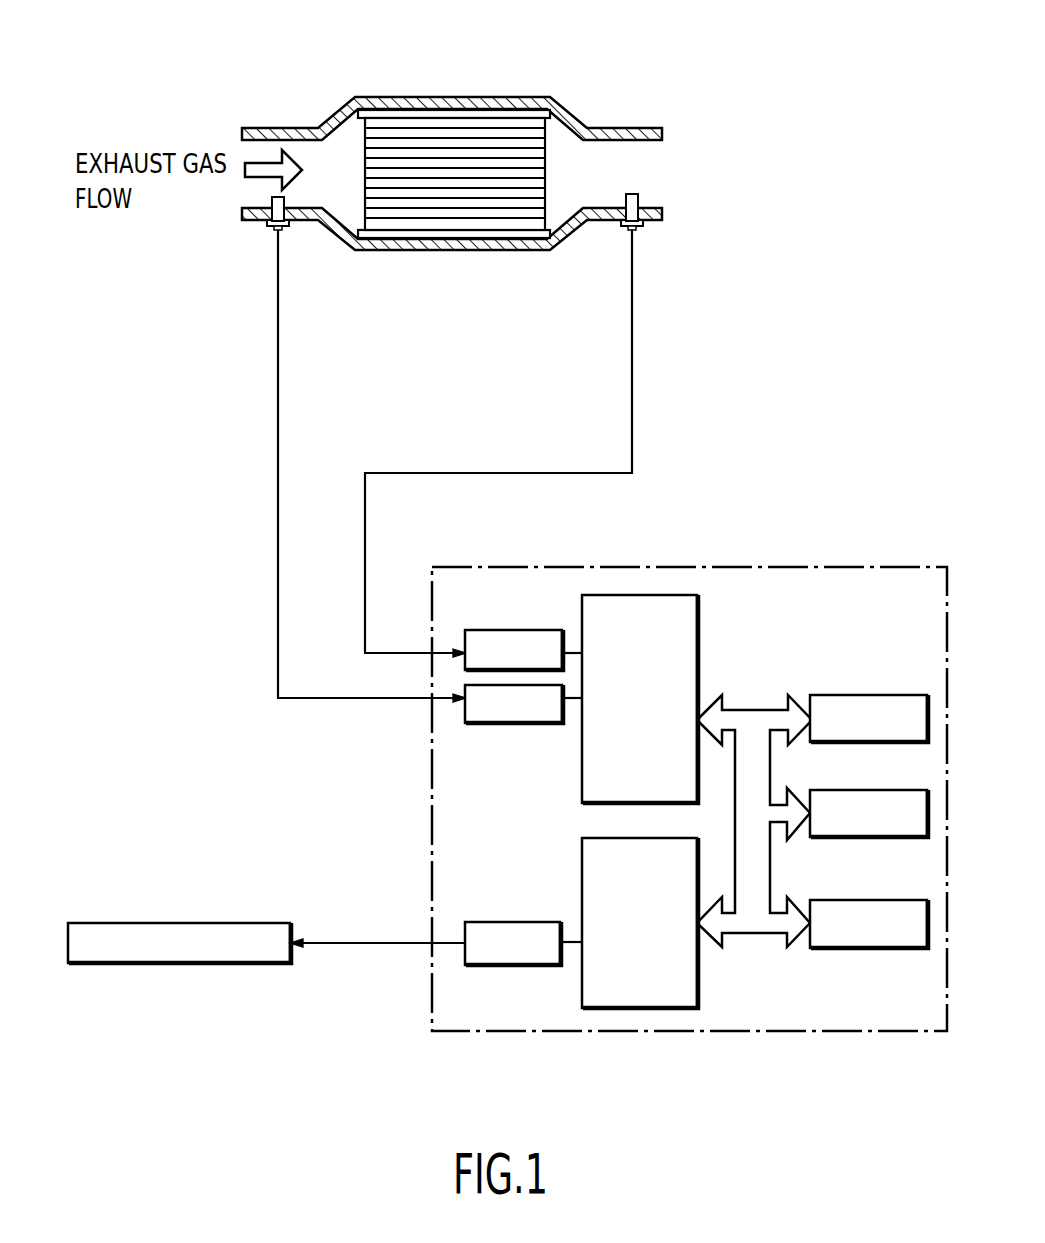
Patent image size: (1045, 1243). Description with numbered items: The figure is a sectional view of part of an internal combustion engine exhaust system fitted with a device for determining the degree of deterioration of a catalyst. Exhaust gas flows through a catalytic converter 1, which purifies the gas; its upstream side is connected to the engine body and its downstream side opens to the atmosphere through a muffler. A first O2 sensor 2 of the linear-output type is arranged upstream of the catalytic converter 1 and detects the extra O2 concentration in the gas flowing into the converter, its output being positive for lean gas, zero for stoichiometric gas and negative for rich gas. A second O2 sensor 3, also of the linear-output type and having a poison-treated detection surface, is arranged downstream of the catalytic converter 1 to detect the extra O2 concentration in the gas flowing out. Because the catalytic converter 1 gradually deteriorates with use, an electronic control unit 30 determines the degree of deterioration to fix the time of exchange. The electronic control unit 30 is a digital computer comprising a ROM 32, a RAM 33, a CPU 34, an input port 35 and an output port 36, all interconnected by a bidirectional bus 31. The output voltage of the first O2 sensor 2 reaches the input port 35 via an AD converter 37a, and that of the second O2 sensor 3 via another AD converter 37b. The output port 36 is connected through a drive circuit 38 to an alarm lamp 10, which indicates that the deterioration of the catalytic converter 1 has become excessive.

The catalytic converter 1 is at (478, 135).
The first O2 sensor 2 is at (260, 202).
The second O2 sensor 3 is at (640, 200).
The alarm lamp 10 is at (233, 923).
The electronic control unit 30 is at (835, 567).
The bidirectional bus 31 is at (752, 710).
The ROM 32 is at (900, 693).
The RAM 33 is at (887, 790).
The CPU 34 is at (892, 900).
The input port 35 is at (697, 630).
The output port 36 is at (697, 996).
The AD converter 37a is at (490, 723).
The AD converter 37b is at (508, 630).
The drive circuit 38 is at (512, 922).